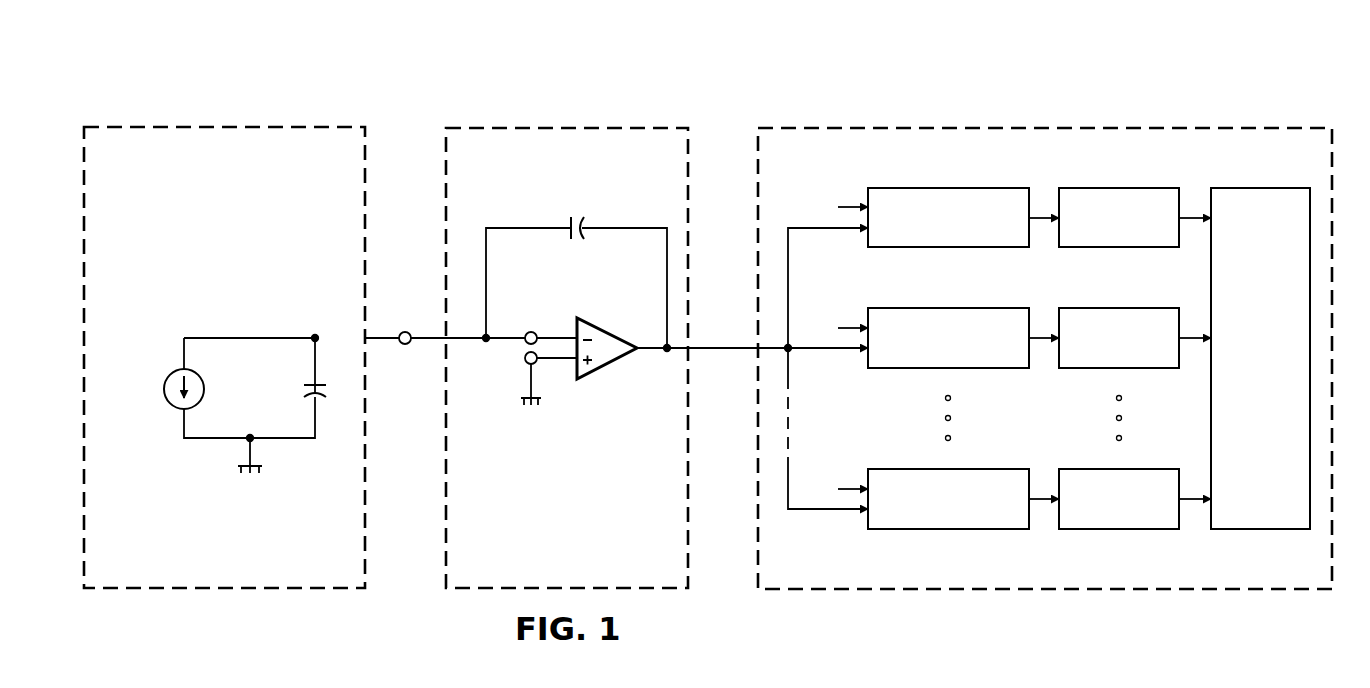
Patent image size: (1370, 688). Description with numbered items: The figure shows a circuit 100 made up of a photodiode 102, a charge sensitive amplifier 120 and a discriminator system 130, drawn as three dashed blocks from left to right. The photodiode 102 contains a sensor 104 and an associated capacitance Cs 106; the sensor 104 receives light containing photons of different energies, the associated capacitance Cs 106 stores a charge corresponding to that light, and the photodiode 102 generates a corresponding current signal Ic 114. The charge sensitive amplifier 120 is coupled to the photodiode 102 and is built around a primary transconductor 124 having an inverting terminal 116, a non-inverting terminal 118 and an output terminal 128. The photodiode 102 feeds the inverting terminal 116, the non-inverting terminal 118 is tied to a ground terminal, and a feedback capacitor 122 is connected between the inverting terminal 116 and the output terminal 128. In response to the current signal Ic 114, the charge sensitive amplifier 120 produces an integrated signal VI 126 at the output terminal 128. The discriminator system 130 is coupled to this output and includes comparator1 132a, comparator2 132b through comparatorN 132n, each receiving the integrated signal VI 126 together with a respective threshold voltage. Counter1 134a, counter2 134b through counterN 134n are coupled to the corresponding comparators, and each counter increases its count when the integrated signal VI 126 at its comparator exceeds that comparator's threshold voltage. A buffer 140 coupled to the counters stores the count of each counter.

The circuit 100 is at (388, 66).
The photodiode 102 is at (190, 126).
The sensor 104 is at (164, 389).
The associated capacitance Cs 106 is at (304, 389).
The current signal Ic 114 is at (404, 346).
The inverting terminal 116 is at (530, 331).
The non-inverting terminal 118 is at (526, 366).
The charge sensitive amplifier 120 is at (540, 126).
The feedback capacitor Cfb 122 is at (576, 240).
The primary transconductor 124 is at (602, 327).
The integrated signal VI 126 is at (725, 355).
The output terminal 128 is at (664, 356).
The discriminator system 130 is at (1084, 126).
The comparator1 132a is at (949, 187).
The comparator2 132b is at (949, 307).
The comparatorN 132n is at (948, 530).
The counter1 134a is at (1120, 187).
The counter2 134b is at (1120, 307).
The counterN 134n is at (1119, 530).
The buffer 140 is at (1259, 187).